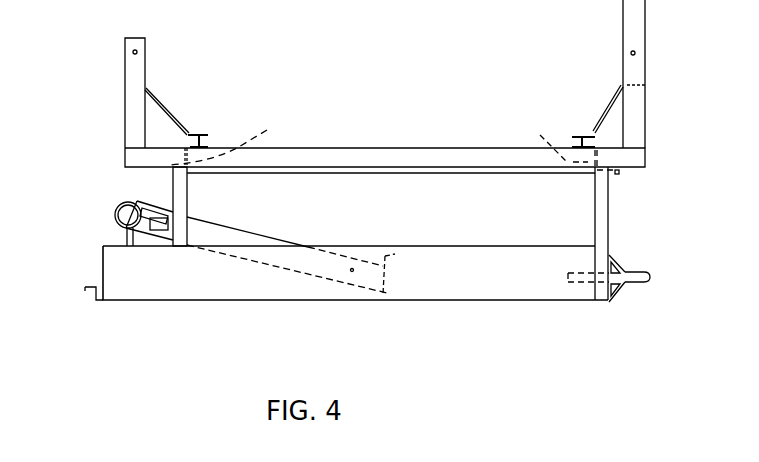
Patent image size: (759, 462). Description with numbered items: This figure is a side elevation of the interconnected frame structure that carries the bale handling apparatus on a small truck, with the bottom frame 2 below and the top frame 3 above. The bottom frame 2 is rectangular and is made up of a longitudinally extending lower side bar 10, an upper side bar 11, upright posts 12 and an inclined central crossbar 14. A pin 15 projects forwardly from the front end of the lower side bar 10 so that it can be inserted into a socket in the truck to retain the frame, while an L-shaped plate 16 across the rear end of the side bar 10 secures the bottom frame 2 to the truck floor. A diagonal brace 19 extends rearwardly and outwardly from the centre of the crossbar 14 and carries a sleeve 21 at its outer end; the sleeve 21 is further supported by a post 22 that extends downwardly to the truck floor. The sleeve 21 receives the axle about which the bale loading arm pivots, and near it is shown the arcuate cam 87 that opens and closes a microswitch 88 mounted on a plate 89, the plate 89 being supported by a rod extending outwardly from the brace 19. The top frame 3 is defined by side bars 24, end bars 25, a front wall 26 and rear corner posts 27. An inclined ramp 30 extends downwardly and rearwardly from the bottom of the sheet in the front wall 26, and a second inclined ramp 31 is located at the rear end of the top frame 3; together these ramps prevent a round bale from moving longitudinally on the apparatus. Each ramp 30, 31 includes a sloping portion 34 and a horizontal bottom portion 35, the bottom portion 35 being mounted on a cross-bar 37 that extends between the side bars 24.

The bottom frame 2 is at (633, 215).
The top frame 3 is at (593, 53).
The lower side bar 10 is at (422, 287).
The upper side bar 11 is at (387, 172).
The post 12 is at (180, 200).
The inclined central crossbar 14 is at (395, 250).
The pin 15 is at (642, 267).
The L-shaped plate 16 is at (82, 290).
The diagonal brace 19 is at (255, 240).
The sleeve 21 is at (118, 207).
The post 22 is at (122, 233).
The side bar 24 is at (403, 156).
The end bar 25 is at (394, 144).
The front wall 26 is at (635, 18).
The rear corner post 27 is at (137, 67).
The inclined ramp 30 is at (595, 135).
The inclined ramp 31 is at (182, 128).
The sloping portion 34 is at (162, 100).
The horizontal bottom portion 35 is at (200, 132).
The cross-bar 37 is at (197, 145).
The arcuate cam 87 is at (147, 238).
The microswitch 88 is at (163, 232).
The plate 89 is at (162, 210).